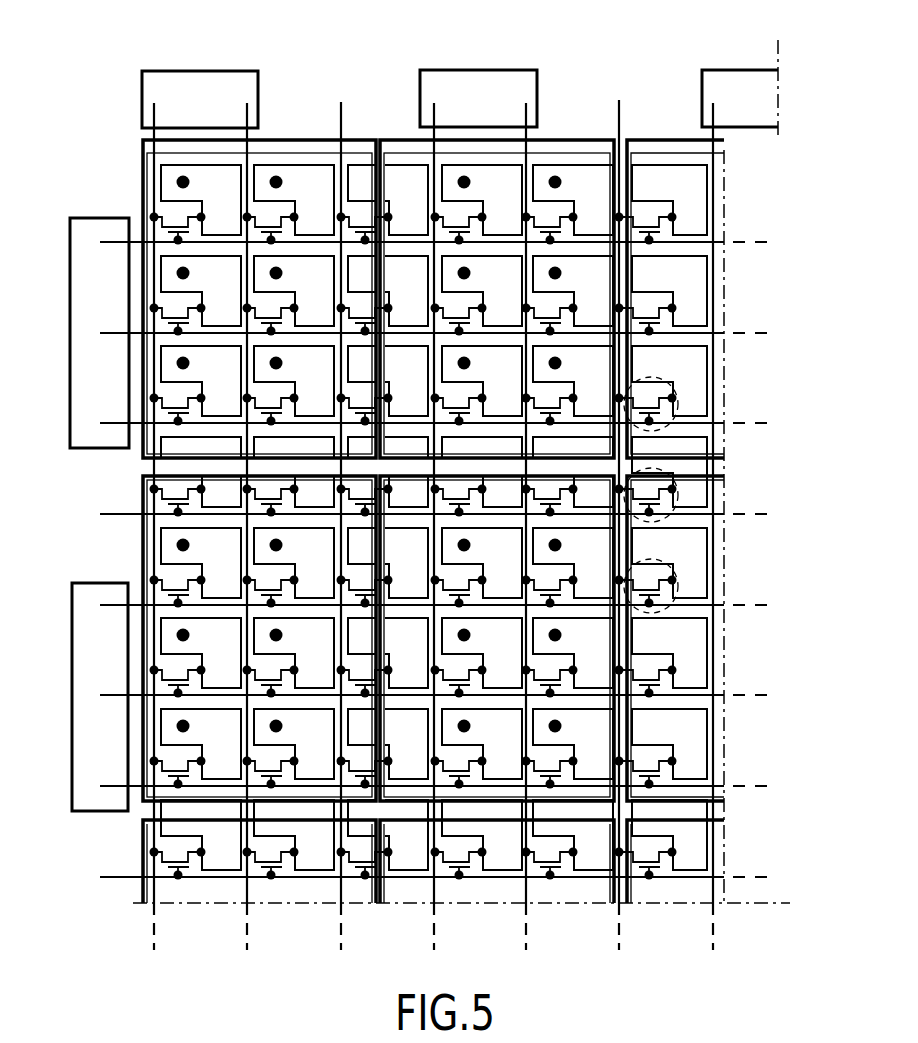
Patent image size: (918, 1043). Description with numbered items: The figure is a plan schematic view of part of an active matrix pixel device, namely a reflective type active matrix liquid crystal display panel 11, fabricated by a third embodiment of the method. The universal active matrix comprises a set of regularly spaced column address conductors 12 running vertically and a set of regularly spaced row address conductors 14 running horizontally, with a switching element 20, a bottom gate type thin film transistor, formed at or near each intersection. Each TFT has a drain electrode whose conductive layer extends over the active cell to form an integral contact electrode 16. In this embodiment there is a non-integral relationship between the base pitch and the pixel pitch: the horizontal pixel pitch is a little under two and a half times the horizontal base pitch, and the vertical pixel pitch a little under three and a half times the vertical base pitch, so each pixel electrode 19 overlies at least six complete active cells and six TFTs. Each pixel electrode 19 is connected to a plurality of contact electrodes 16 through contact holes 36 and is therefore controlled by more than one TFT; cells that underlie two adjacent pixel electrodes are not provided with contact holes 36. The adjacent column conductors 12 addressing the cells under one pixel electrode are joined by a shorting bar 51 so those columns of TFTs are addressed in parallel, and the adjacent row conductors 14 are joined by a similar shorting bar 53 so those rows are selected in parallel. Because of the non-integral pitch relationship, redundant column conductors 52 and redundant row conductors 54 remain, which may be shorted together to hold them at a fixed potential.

The active matrix liquid crystal display panel 11 is at (458, 42).
The column address conductors 12 is at (527, 137).
The row address conductors 14 is at (135, 240).
The contact electrode 16 is at (703, 290).
The pixel electrode 19 is at (180, 182).
The switching element 20 is at (670, 390).
The contact holes 36 is at (147, 182).
The shorting bar 51 is at (200, 87).
The redundant column conductors 52 is at (341, 101).
The shorting bar 53 is at (110, 811).
The redundant row conductors 54 is at (127, 508).